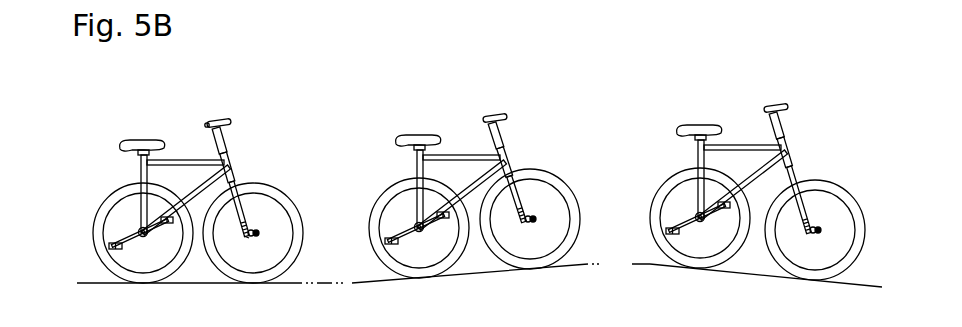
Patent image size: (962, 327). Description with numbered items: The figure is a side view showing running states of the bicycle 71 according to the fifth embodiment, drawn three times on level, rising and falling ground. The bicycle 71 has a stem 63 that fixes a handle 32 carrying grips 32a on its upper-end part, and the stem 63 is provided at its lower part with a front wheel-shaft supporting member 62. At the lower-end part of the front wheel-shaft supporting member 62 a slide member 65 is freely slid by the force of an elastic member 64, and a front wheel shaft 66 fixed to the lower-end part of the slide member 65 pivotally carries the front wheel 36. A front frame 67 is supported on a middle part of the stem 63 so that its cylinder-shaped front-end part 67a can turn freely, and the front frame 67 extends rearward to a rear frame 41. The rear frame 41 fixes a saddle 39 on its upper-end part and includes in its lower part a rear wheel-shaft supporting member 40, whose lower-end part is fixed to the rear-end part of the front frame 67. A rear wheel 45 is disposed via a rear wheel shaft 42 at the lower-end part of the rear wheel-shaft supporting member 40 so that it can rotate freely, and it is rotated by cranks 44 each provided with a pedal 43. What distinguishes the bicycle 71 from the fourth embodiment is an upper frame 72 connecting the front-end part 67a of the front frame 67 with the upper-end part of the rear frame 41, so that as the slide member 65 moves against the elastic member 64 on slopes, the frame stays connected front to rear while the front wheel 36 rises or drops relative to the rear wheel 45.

The bicycle 71 is at (209, 98).
The upper frame 72 is at (448, 158).
The handle 32 is at (228, 125).
The grip 32a is at (222, 114).
The front wheel 36 is at (302, 242).
The saddle 39 is at (143, 152).
The rear wheel-shaft supporting member 40 is at (137, 204).
The rear frame 41 is at (140, 172).
The rear wheel shaft 42 is at (141, 238).
The pedal 43 is at (109, 247).
The crank 44 is at (112, 244).
The rear wheel 45 is at (102, 269).
The front wheel-shaft supporting member 62 is at (240, 190).
The stem 63 is at (231, 132).
The elastic member 64 is at (250, 228).
The slide member 65 is at (248, 243).
The front wheel shaft 66 is at (257, 236).
The front frame 67 is at (200, 188).
The front-end part 67a is at (236, 163).